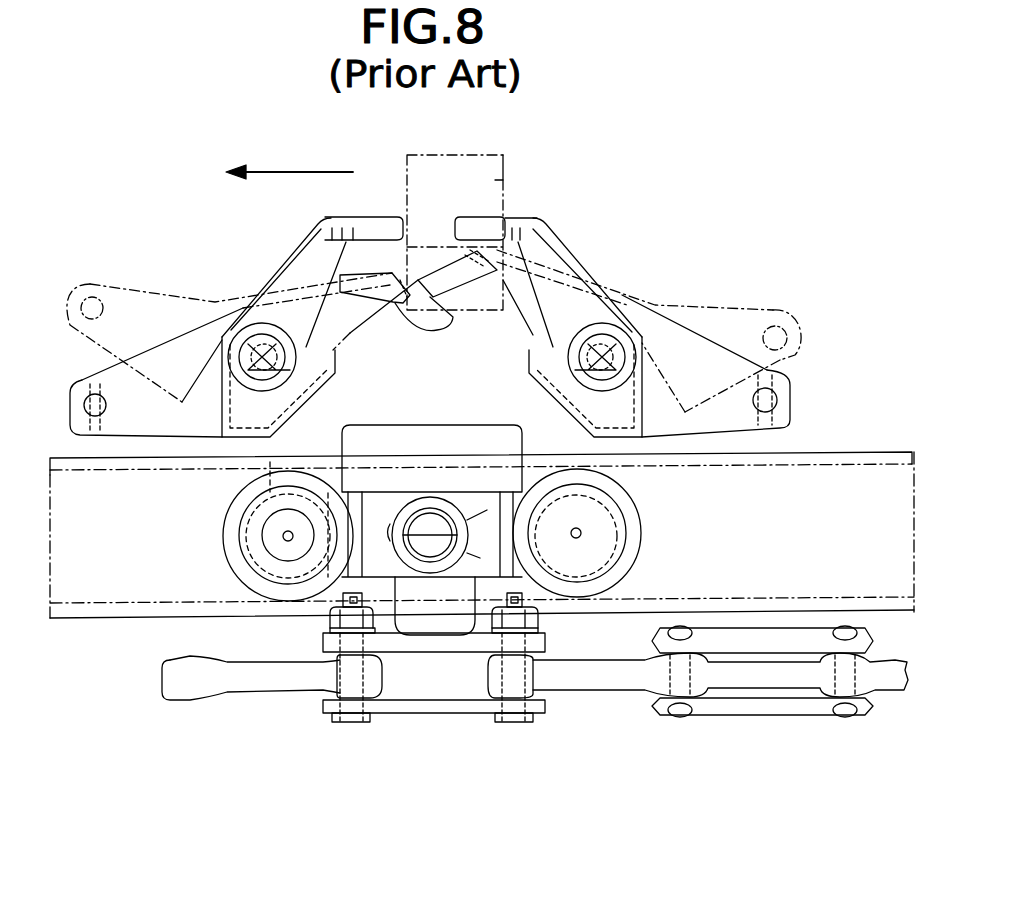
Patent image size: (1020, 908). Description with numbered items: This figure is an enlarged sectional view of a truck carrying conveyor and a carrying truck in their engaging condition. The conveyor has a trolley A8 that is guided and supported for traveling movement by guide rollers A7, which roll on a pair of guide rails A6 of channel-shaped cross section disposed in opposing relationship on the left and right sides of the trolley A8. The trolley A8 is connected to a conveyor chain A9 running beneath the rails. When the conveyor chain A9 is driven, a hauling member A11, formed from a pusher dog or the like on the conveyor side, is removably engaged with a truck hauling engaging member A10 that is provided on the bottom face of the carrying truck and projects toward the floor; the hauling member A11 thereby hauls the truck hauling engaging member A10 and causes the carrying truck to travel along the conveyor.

The guide rails A6 is at (832, 448).
The guide rollers A7 is at (222, 553).
The trolley A8 is at (293, 447).
The conveyor chain A9 is at (283, 719).
The truck hauling engaging member A10 is at (503, 180).
The hauling member A11 is at (290, 258).